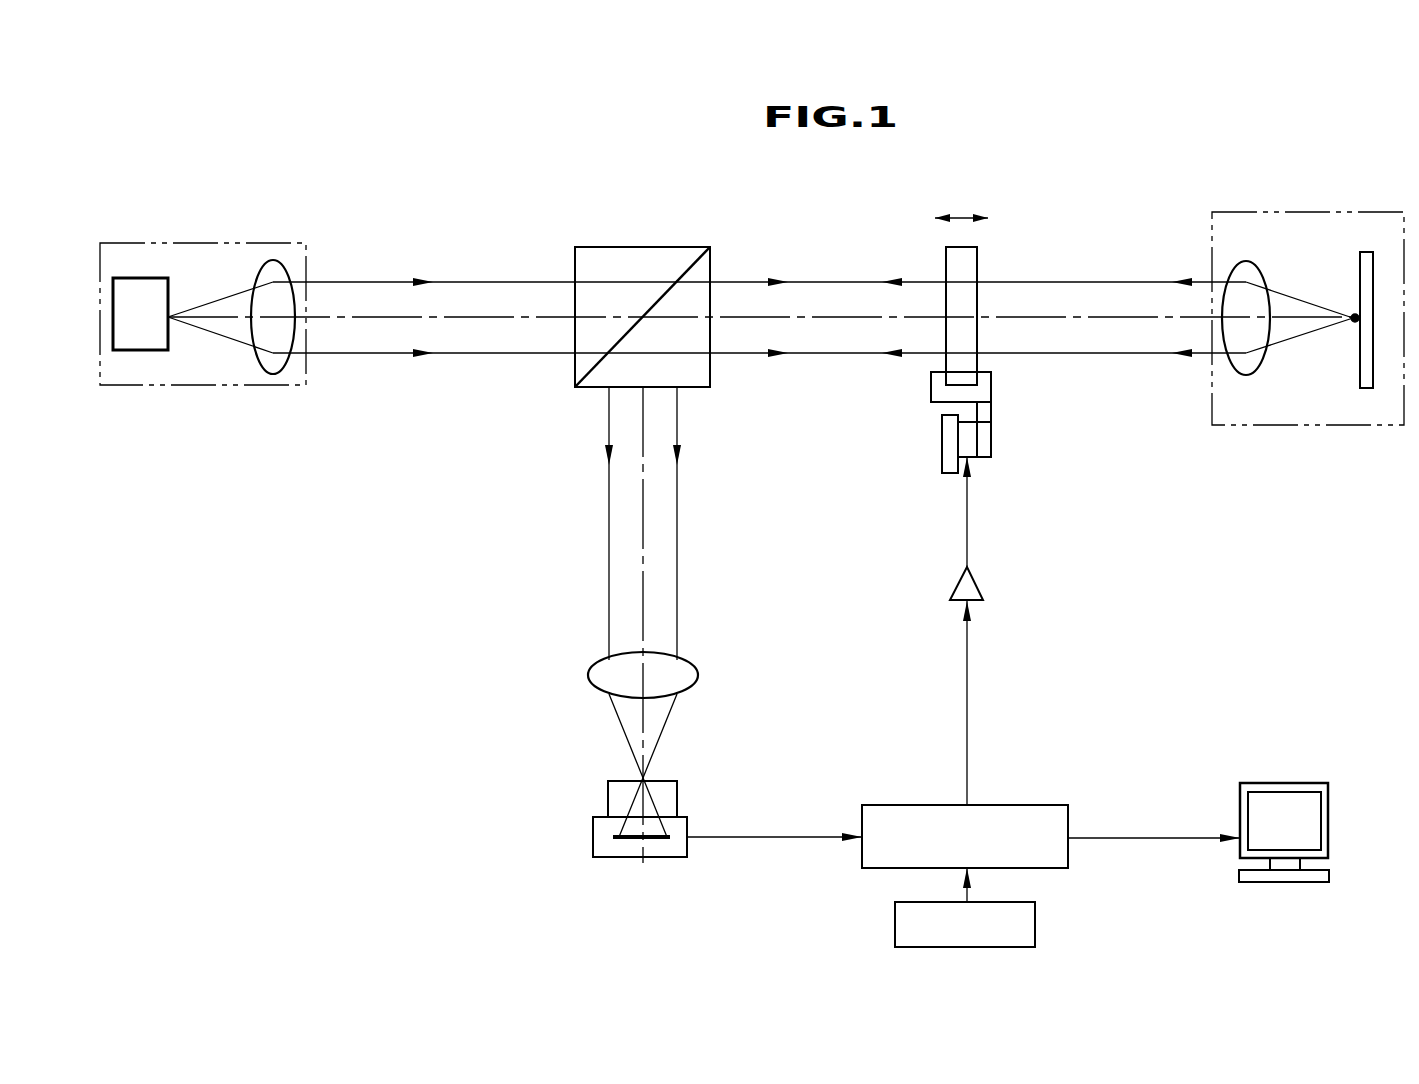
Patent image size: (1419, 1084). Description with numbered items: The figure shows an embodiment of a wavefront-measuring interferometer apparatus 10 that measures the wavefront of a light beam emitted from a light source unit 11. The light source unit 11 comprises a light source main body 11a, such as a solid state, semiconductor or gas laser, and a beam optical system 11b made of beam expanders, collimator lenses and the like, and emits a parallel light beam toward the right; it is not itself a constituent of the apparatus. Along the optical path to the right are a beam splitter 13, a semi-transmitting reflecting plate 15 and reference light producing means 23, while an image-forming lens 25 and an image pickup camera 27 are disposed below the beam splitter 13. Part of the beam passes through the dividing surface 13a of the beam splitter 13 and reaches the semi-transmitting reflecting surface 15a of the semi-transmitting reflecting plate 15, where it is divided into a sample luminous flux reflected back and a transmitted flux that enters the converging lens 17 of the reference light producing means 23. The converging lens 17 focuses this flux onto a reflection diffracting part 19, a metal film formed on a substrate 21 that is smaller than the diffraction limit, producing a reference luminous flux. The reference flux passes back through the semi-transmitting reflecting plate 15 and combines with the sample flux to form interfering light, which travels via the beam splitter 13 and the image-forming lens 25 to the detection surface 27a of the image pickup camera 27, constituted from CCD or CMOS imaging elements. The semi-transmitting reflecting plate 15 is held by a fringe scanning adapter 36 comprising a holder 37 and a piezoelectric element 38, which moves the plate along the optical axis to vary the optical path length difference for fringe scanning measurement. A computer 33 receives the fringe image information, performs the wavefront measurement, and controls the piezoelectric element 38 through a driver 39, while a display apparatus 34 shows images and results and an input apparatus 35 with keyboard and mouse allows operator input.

The wavefront-measuring interferometer apparatus 10 is at (1022, 172).
The light source unit 11 is at (150, 395).
The light source main body 11a is at (126, 278).
The beam optical system 11b is at (275, 262).
The beam splitter 13 is at (706, 249).
The dividing surface 13a is at (573, 381).
The semi-transmitting reflecting plate 15 is at (1000, 230).
The semi-transmitting reflecting surface 15a is at (946, 264).
The converging lens 17 is at (1240, 270).
The reflection diffracting part 19 is at (1353, 312).
The substrate 21 is at (1358, 370).
The reference light producing means 23 is at (1330, 212).
The image-forming lens 25 is at (592, 673).
The image pickup camera 27 is at (593, 830).
The detection surface 27a is at (668, 832).
The computer 33 is at (900, 805).
The display apparatus 34 is at (1329, 812).
The input apparatus 35 is at (1035, 922).
The fringe scanning adapter 36 is at (935, 452).
The holder 37 is at (990, 412).
The piezoelectric element 38 is at (984, 446).
The driver 39 is at (950, 594).